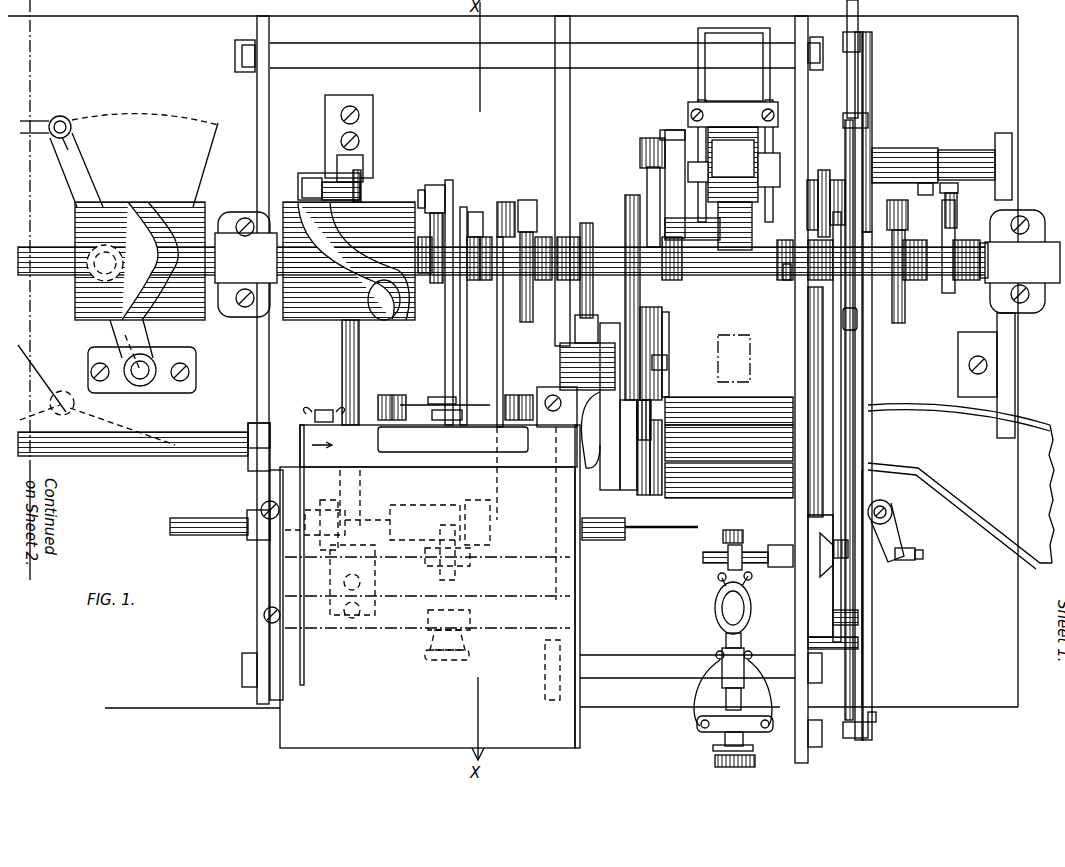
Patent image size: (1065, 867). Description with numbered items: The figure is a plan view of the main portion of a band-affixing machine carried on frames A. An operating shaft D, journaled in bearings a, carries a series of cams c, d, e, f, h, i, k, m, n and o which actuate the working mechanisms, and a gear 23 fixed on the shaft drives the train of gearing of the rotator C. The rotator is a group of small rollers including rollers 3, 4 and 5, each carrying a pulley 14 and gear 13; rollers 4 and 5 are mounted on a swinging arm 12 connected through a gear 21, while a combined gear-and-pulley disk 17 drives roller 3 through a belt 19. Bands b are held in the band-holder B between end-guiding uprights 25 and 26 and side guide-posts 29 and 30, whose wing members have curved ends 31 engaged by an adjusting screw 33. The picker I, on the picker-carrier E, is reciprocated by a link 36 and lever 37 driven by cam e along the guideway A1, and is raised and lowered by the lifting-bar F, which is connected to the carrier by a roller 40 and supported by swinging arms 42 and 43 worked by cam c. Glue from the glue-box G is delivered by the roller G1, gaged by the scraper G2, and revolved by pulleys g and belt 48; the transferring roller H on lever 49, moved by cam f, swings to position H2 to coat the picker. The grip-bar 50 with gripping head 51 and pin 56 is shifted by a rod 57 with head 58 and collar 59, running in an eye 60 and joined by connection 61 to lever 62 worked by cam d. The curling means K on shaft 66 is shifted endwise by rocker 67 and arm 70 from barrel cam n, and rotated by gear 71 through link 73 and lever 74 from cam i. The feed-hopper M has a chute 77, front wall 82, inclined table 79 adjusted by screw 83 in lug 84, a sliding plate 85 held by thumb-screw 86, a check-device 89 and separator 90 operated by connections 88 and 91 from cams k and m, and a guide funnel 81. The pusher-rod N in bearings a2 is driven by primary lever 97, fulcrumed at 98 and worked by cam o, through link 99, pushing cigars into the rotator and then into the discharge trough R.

The link 99 is at (55, 117).
The primary lever 97 is at (134, 160).
The fulcrum 98 is at (145, 386).
The cam o is at (76, 296).
The pusher or feed-rod N is at (75, 447).
The bearings a2 is at (250, 428).
The shaft or rotatable member 66 is at (196, 518).
The bearings a is at (637, 263).
The operating shaft D is at (708, 280).
The arm 70 is at (306, 186).
The barrel cam n is at (312, 318).
The rocker 67 is at (357, 364).
The cam m is at (431, 246).
The connection 88 is at (447, 346).
The automatic check-device 89 is at (455, 398).
The connection 91 is at (462, 352).
The cam k is at (479, 265).
The cam i is at (527, 263).
The lever 74 is at (508, 204).
The link 73 is at (500, 355).
The thumb-screw device 86 is at (322, 408).
The separator-device 90 is at (438, 446).
The chute 77 is at (325, 455).
The longitudinally sliding upright plate 85 is at (304, 650).
The inclined table or plate portion 79 is at (430, 586).
The front wall 82 is at (399, 470).
The gear 71 is at (427, 563).
The stationary lug 84 is at (468, 618).
The adjusting screw 83 is at (447, 653).
The guide funnel 81 is at (590, 406).
The movable carrier or swinging arm 12 is at (598, 326).
The gear 23 is at (622, 216).
The cam h is at (588, 208).
The cam f is at (648, 193).
The lever 49 is at (673, 143).
The combined gear-and-pulley disk 17 is at (664, 353).
The gear 21 is at (648, 363).
The belt 19 is at (655, 396).
The glue-box or reservoir G is at (735, 125).
The scraper G2 is at (733, 114).
The delivering roller G1 is at (734, 164).
The glue-transferring roller H is at (736, 256).
The pulleys or sprocket wheels g is at (785, 276).
The belt or chain 48 is at (782, 253).
The frames A is at (565, 140).
The guideway A1 is at (816, 346).
The position of transferring roller H2 is at (734, 358).
The roller 3 is at (762, 410).
The roller 4 is at (729, 443).
The roller 5 is at (770, 499).
The centering appliance, winder or rotator C is at (735, 470).
The gear 13 is at (641, 495).
The pulley 14 is at (657, 495).
The curling means K is at (665, 529).
The feed-hopper M is at (580, 580).
The end-guiding upright 25 is at (732, 529).
The gripping head 51 is at (778, 546).
The picker I is at (728, 562).
The bands b is at (716, 609).
The side guide-post 29 is at (718, 578).
The side guide-post 30 is at (751, 578).
The end-guiding upright 26 is at (734, 671).
The band-holder B is at (724, 698).
The inwardly curved ends 31 is at (748, 752).
The flanged adjusting screw 33 is at (715, 761).
The lever 37 is at (824, 170).
The cam e is at (843, 280).
The loose running eye 60 is at (845, 118).
The connection 61 is at (868, 78).
The swinging arm 43 is at (878, 180).
The lever or member 62 is at (908, 215).
The cam d is at (905, 314).
The cam c is at (950, 292).
The collar 59 is at (856, 322).
The link 36 is at (838, 340).
The shifting-rod 57 is at (852, 368).
The lifting-bar F is at (862, 478).
The swinging arm 42 is at (850, 738).
The discharge trough R is at (888, 447).
The picker-carrier E is at (902, 620).
The lug or roller 40 is at (848, 566).
The head 58 is at (880, 530).
The grip-bar 50 is at (923, 558).
The pin or lug 56 is at (895, 562).